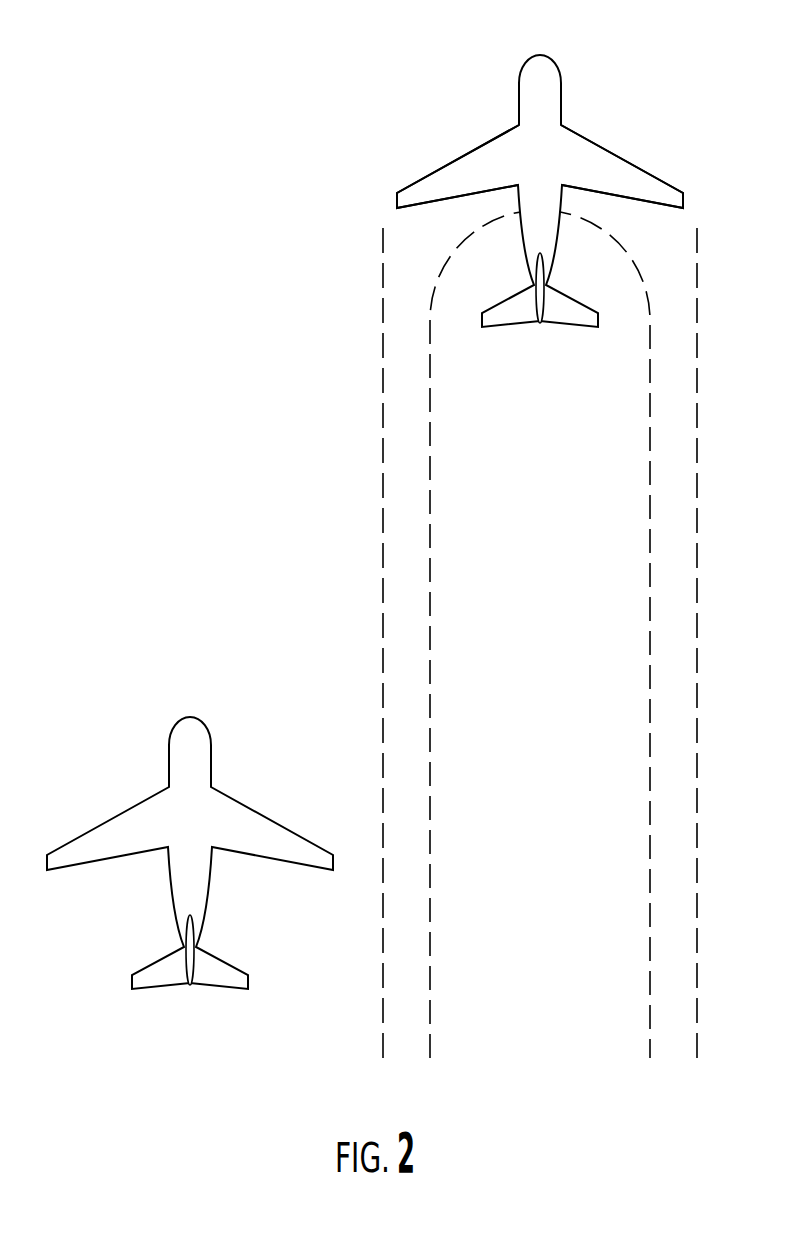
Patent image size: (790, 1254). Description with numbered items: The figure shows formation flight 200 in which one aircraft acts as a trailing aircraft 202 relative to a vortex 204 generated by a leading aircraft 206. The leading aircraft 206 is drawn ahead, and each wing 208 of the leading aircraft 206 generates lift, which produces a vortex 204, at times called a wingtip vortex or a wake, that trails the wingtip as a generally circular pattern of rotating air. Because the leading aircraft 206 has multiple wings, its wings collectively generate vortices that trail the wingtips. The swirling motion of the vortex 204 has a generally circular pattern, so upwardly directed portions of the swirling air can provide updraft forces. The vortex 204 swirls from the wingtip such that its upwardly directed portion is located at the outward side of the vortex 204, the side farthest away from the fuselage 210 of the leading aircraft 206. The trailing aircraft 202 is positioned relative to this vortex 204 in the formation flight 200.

The formation flight 200 is at (185, 85).
The trailing aircraft 202 is at (128, 765).
The vortex 204 is at (380, 500).
The leading aircraft 206 is at (477, 103).
The wing 208 is at (463, 157).
The fuselage 210 is at (520, 193).